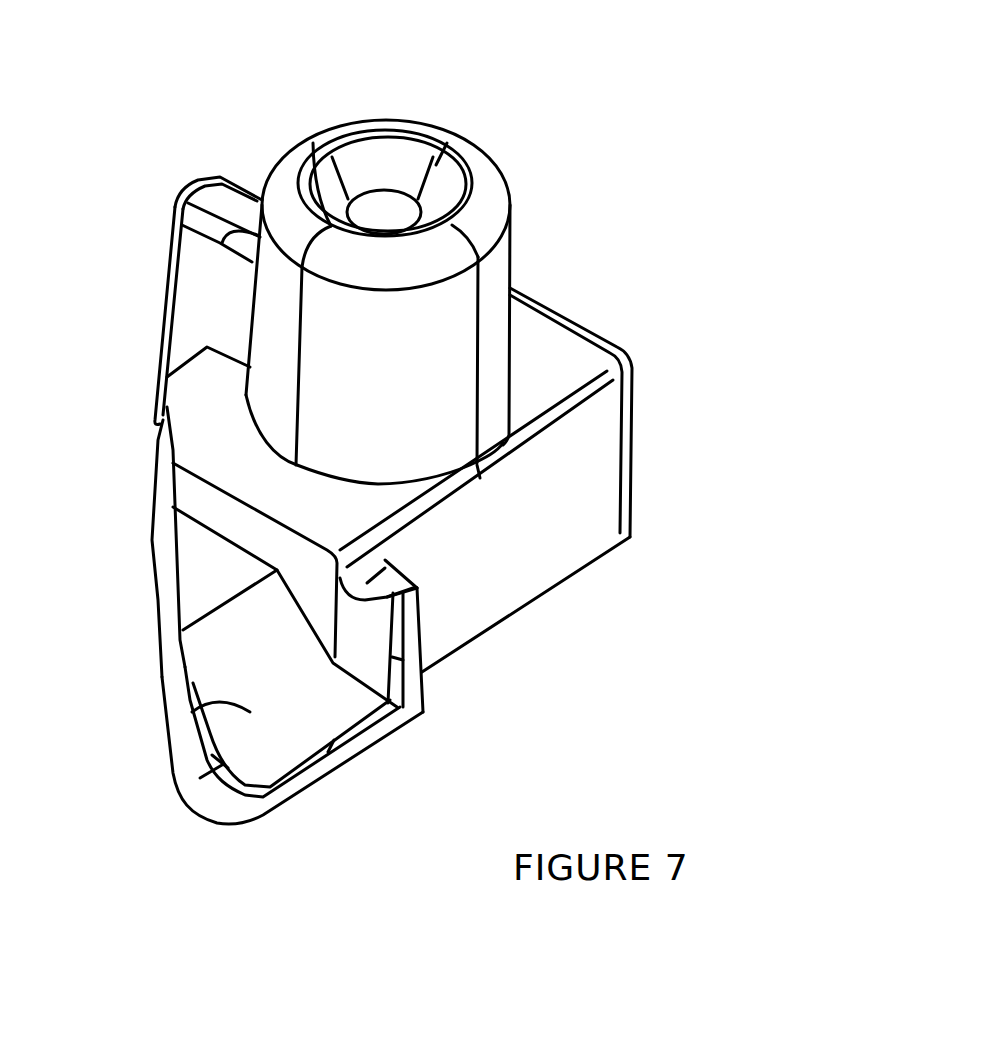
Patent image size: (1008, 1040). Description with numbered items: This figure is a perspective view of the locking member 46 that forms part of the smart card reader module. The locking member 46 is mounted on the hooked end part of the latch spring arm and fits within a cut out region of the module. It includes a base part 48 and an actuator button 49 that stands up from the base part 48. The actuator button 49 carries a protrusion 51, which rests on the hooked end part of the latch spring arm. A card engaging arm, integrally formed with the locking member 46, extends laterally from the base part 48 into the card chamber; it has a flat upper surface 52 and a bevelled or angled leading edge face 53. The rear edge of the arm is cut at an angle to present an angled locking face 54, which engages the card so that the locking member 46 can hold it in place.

The locking member 46 is at (590, 87).
The base part 48 is at (553, 553).
The actuator button 49 is at (295, 210).
The protrusion 51 is at (200, 293).
The flat upper surface 52 is at (207, 572).
The bevelled or angled leading edge face 53 is at (187, 717).
The angled locking face 54 is at (168, 520).